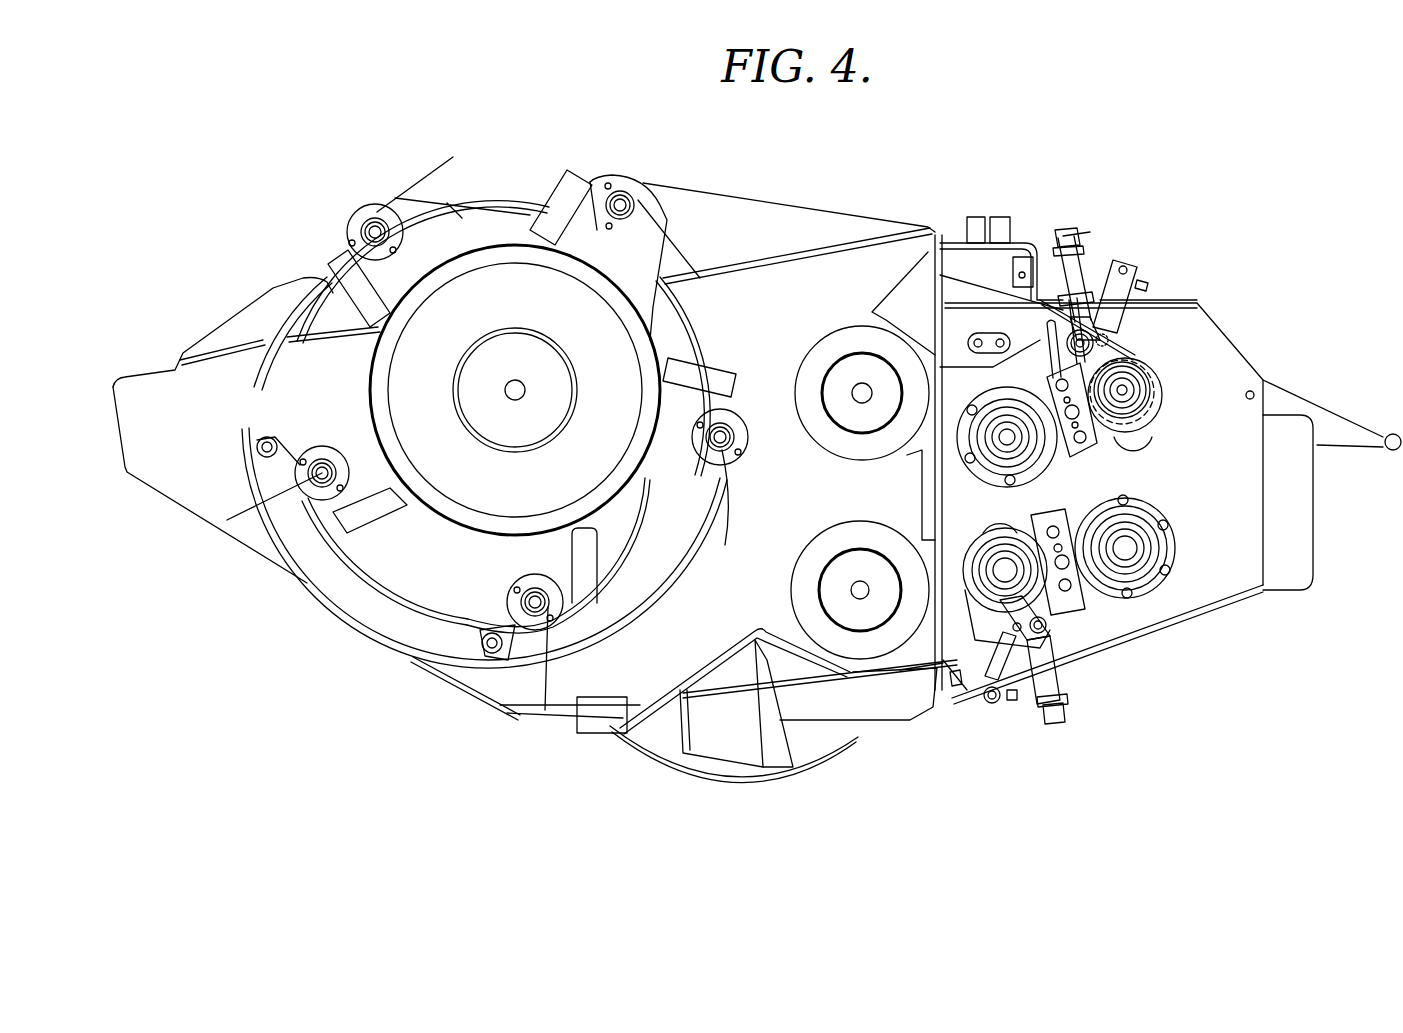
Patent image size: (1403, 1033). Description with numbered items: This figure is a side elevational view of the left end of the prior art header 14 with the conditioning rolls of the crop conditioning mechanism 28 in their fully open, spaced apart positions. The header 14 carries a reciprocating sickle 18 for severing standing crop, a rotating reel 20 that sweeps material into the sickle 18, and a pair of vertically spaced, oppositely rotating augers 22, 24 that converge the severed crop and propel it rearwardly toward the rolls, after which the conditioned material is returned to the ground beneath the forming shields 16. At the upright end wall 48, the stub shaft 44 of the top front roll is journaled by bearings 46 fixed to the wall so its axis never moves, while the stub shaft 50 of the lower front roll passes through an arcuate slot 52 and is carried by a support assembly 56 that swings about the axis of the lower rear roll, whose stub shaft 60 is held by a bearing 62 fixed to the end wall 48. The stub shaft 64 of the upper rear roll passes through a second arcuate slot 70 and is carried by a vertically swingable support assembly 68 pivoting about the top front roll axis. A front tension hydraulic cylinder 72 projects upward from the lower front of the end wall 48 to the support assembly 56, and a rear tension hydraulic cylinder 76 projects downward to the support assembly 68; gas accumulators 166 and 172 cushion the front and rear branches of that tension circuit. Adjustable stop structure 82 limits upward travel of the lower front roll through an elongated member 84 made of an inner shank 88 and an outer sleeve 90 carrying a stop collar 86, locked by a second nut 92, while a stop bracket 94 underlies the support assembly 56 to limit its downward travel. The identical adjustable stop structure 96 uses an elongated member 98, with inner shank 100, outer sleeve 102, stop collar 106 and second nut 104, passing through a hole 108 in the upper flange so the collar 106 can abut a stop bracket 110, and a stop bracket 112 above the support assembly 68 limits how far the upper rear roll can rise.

The header 14 is at (815, 175).
The forming shields 16 is at (1350, 445).
The reciprocating sickle 18 is at (575, 735).
The rotating reel 20 is at (378, 205).
The auger 22 is at (808, 368).
The auger 24 is at (800, 600).
The crop conditioning mechanism 28 is at (1133, 460).
The stub shaft 44 is at (960, 428).
The bearings 46 is at (965, 437).
The end wall 48 is at (1238, 370).
The stub shaft 50 is at (1005, 575).
The slot 52 is at (997, 570).
The support assembly 56 is at (1080, 518).
The stub shaft 60 is at (1130, 548).
The bearing 62 is at (1151, 544).
The stub shaft 64 is at (1125, 390).
The support assembly 68 is at (1155, 412).
The slot 70 is at (1148, 437).
The tension hydraulic cylinder 72 is at (968, 690).
The tension hydraulic cylinder 76 is at (1140, 282).
The adjustable stop structure 82 is at (1058, 705).
The elongated member 84 is at (1040, 685).
The stop collar 86 is at (1065, 705).
The inner elongated shank 88 is at (1060, 660).
The outer elongated sleeve 90 is at (1055, 688).
The second nut 92 is at (1052, 724).
The stop bracket 94 is at (1133, 617).
The adjustable stop structure 96 is at (1105, 231).
The elongated member 98 is at (1060, 300).
The inner shank 100 is at (1097, 330).
The outer sleeve 102 is at (1082, 262).
The second nut 104 is at (1063, 228).
The stop collar 106 is at (1083, 243).
The hole 108 is at (1122, 262).
The stop bracket 110 is at (1180, 303).
The stop bracket 112 is at (1040, 355).
The gas pressure accumulator 166 is at (960, 252).
The compressive gas accumulator 172 is at (1013, 250).